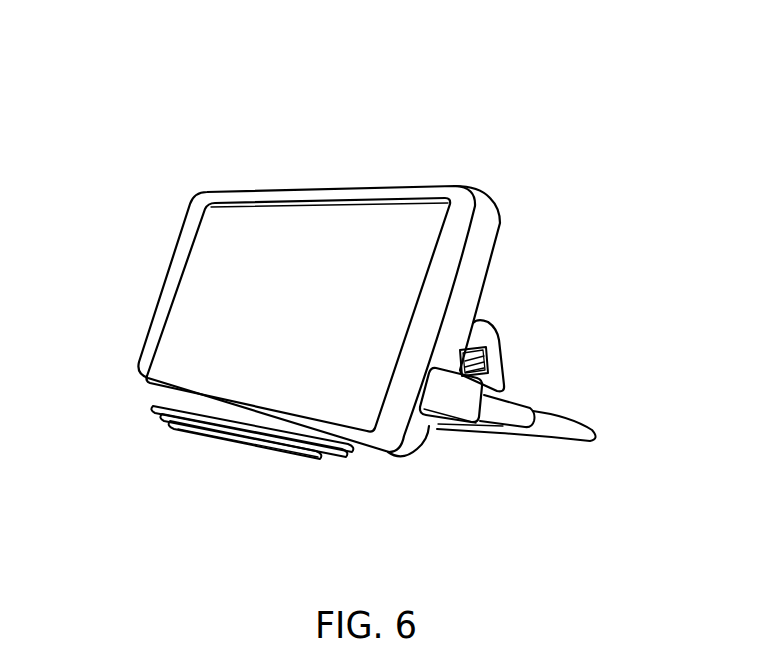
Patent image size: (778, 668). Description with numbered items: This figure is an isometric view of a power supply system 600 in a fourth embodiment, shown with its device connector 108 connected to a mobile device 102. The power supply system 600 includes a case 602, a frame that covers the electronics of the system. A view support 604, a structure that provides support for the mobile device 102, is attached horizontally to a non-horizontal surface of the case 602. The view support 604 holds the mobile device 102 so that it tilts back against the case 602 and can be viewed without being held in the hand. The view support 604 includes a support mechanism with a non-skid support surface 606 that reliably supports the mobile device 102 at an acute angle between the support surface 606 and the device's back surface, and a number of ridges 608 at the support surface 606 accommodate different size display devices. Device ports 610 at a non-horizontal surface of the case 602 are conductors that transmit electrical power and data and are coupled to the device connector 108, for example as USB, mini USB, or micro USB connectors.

The power supply system 600 is at (188, 122).
The mobile device 102 is at (242, 262).
The device ports 610 is at (505, 339).
The case 602 is at (496, 372).
The device connector 108 is at (585, 415).
The ridges 608 is at (162, 398).
The view support 604 is at (218, 457).
The support surface 606 is at (343, 465).